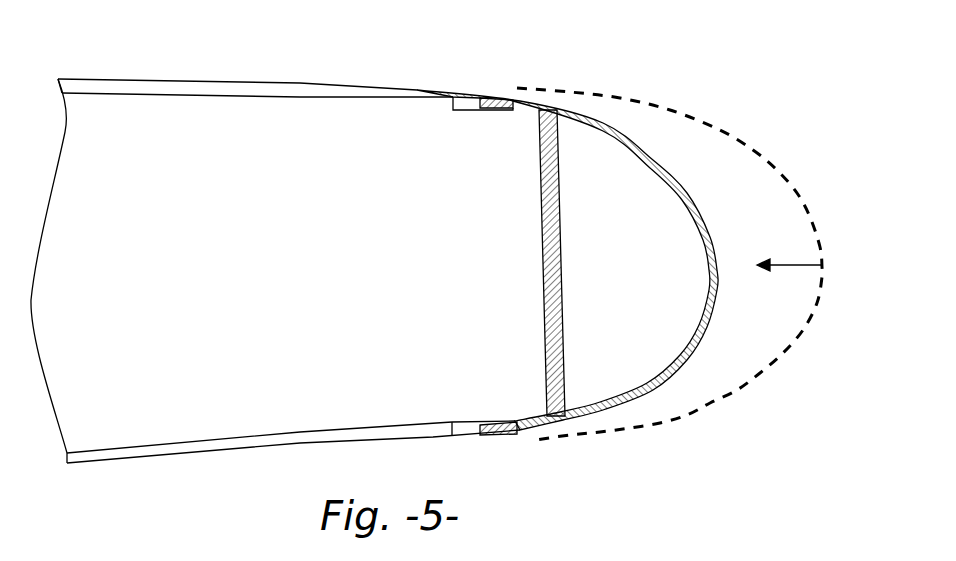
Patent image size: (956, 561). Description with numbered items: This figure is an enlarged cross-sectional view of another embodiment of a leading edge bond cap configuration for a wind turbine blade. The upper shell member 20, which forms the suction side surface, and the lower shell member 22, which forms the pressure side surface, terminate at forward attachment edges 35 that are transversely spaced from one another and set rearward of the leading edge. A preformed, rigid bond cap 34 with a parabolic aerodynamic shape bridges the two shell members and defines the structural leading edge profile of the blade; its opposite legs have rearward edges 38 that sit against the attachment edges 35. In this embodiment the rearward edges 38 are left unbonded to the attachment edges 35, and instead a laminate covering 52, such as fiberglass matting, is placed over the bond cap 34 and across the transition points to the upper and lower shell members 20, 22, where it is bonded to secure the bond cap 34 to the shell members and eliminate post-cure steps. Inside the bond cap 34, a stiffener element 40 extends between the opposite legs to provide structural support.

The upper shell member 20 is at (232, 87).
The lower shell member 22 is at (255, 448).
The bond cap 34 is at (687, 183).
The forward attachment edges 35 is at (493, 113).
The rearward edges 38 is at (495, 98).
The stiffener element 40 is at (560, 280).
The laminate covering 52 is at (595, 122).